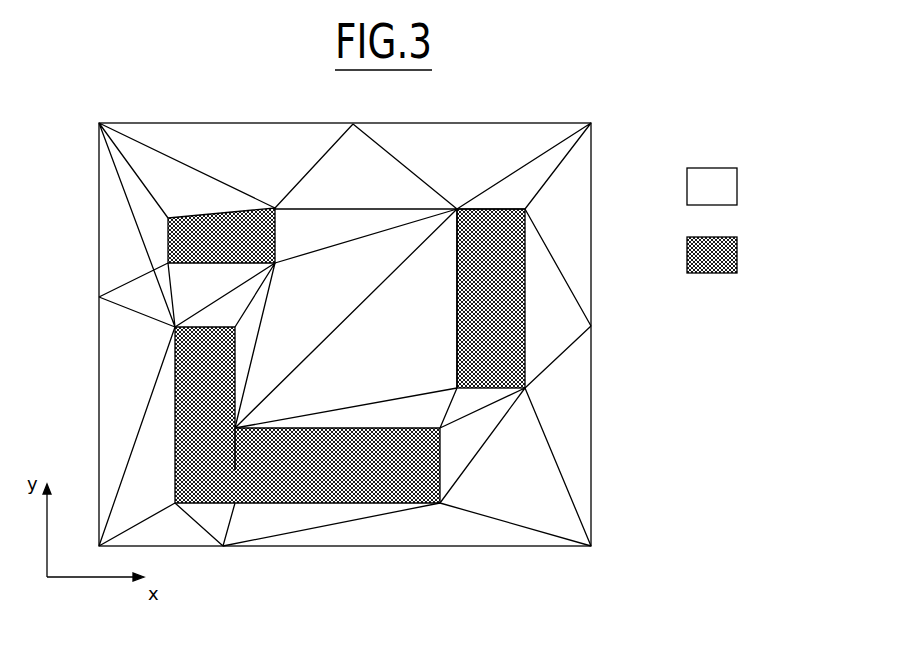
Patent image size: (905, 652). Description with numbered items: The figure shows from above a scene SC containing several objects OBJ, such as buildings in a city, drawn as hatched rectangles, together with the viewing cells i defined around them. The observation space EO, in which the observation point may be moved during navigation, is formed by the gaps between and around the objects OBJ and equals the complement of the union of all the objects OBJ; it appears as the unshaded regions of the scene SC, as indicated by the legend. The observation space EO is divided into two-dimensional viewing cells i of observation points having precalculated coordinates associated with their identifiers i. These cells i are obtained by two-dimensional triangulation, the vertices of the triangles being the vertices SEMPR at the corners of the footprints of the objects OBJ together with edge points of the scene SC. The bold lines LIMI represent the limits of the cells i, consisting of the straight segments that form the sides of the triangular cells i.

The scene SC is at (618, 543).
The cell limit lines LIMI is at (680, 320).
The object OBJ is at (78, 421).
The observation space EO is at (621, 177).
The footprint vertex SEMPR is at (535, 205).
The viewing cell i is at (463, 447).